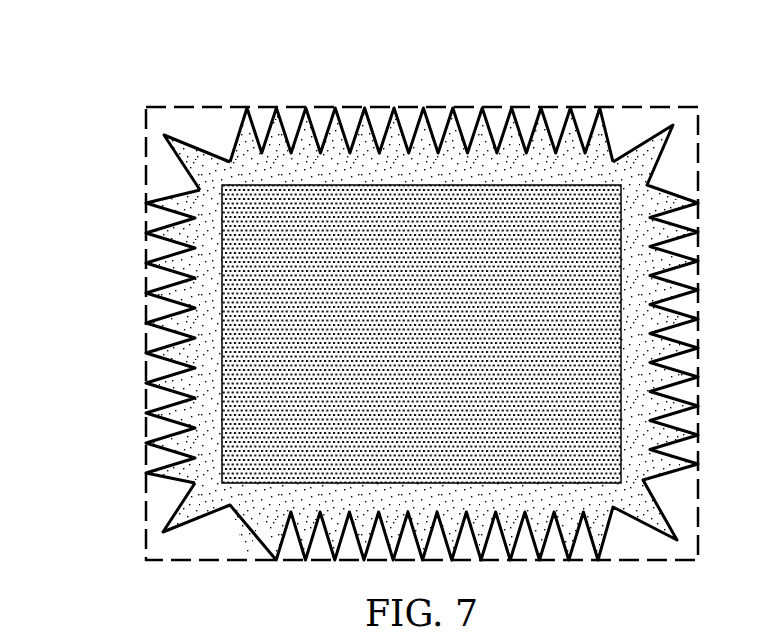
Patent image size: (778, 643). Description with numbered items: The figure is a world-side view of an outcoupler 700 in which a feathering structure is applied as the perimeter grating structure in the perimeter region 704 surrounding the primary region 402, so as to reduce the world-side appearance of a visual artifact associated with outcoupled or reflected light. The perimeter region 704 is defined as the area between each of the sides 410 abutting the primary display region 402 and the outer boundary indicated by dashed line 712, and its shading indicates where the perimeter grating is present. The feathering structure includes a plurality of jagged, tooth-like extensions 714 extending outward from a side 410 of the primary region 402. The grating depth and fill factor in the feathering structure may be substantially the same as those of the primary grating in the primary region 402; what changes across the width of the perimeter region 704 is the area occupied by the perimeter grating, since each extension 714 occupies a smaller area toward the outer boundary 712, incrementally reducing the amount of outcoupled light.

The display device 700 is at (126, 50).
The perimeter region 704 is at (152, 167).
The outer boundary 712 is at (500, 94).
The extensions 714 is at (148, 258).
The side 410 is at (224, 335).
The primary region 402 is at (445, 350).